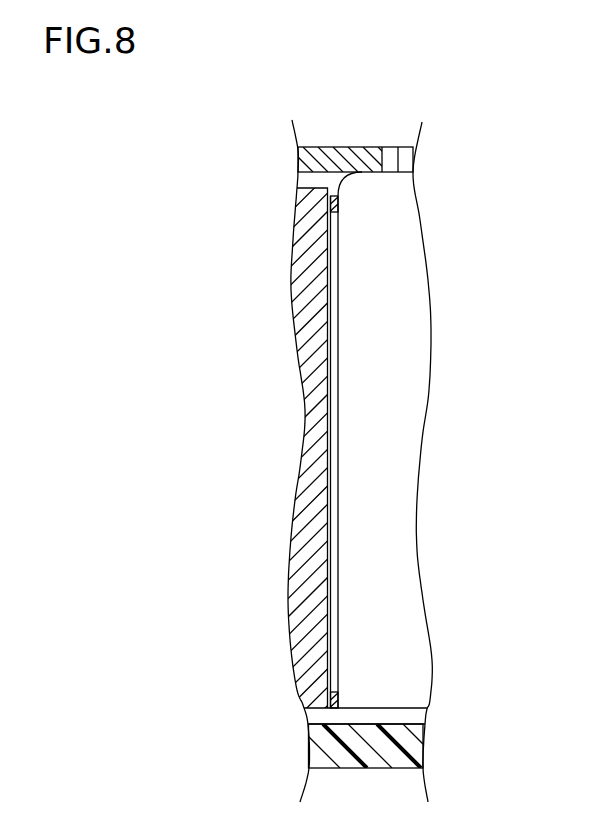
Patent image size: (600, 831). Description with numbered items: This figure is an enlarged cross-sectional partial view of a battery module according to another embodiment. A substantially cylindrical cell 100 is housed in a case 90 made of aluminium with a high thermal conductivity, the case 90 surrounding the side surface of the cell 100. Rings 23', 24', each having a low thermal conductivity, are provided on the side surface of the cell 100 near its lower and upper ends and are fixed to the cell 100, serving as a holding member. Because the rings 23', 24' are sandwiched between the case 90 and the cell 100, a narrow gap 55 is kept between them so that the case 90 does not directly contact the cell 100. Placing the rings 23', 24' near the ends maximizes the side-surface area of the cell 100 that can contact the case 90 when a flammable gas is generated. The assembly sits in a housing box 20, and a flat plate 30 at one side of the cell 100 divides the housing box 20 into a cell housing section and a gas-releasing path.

The flat plate 30 is at (338, 147).
The ring 24' is at (273, 197).
The case 90 is at (307, 252).
The gap 55 is at (335, 334).
The cell 100 is at (400, 398).
The ring 23' is at (273, 700).
The housing box 20 is at (410, 748).